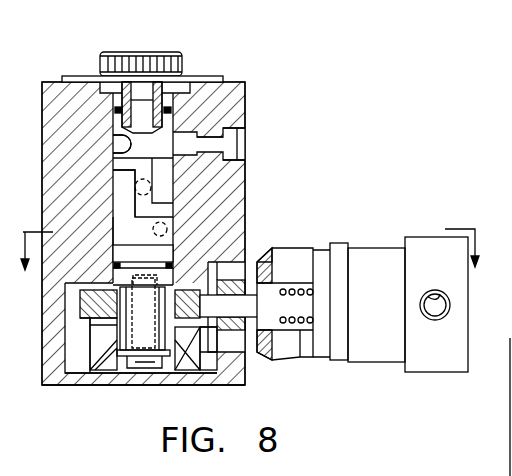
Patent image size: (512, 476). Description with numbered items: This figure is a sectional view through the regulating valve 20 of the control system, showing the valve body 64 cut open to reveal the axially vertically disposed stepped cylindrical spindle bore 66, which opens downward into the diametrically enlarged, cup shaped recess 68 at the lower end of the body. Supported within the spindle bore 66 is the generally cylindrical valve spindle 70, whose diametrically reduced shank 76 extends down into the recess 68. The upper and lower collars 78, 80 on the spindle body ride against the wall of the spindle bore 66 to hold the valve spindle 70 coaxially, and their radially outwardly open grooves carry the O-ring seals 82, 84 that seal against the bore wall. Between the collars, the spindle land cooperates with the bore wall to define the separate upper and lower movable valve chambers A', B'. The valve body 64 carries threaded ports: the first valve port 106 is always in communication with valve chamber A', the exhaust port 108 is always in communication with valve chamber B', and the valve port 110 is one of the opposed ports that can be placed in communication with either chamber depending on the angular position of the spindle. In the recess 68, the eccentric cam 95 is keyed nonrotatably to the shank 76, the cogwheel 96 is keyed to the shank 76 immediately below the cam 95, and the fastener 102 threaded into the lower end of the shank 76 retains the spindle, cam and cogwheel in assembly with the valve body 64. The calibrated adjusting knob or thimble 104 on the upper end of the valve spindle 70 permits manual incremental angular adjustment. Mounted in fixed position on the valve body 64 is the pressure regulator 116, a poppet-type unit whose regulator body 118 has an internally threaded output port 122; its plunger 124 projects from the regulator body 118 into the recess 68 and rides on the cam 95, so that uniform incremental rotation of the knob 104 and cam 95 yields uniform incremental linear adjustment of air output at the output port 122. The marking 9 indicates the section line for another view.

The regulating valve 20 is at (248, 51).
The valve body 64 is at (247, 181).
The spindle bore 66 is at (117, 154).
The cup shaped recess 68 is at (72, 372).
The valve spindle 70 is at (198, 61).
The shank 76 is at (185, 350).
The collar 78 is at (115, 100).
The collar 80 is at (113, 253).
The O-ring seal 82 is at (172, 108).
The O-ring seal 84 is at (242, 245).
The eccentric cam 95 is at (87, 307).
The cogwheel 96 is at (198, 358).
The fastener 102 is at (143, 353).
The adjusting knob or thimble 104 is at (135, 50).
The first valve port 106 is at (167, 230).
The exhaust port 108 is at (233, 137).
The valve port 110 is at (510, 457).
The pressure regulator 116 is at (378, 213).
The regulator body 118 is at (373, 348).
The output port 122 is at (450, 305).
The plunger 124 is at (290, 308).
The valve chamber A' is at (73, 193).
The valve chamber B' is at (245, 152).
The section line 9- 9 is at (248, 234).